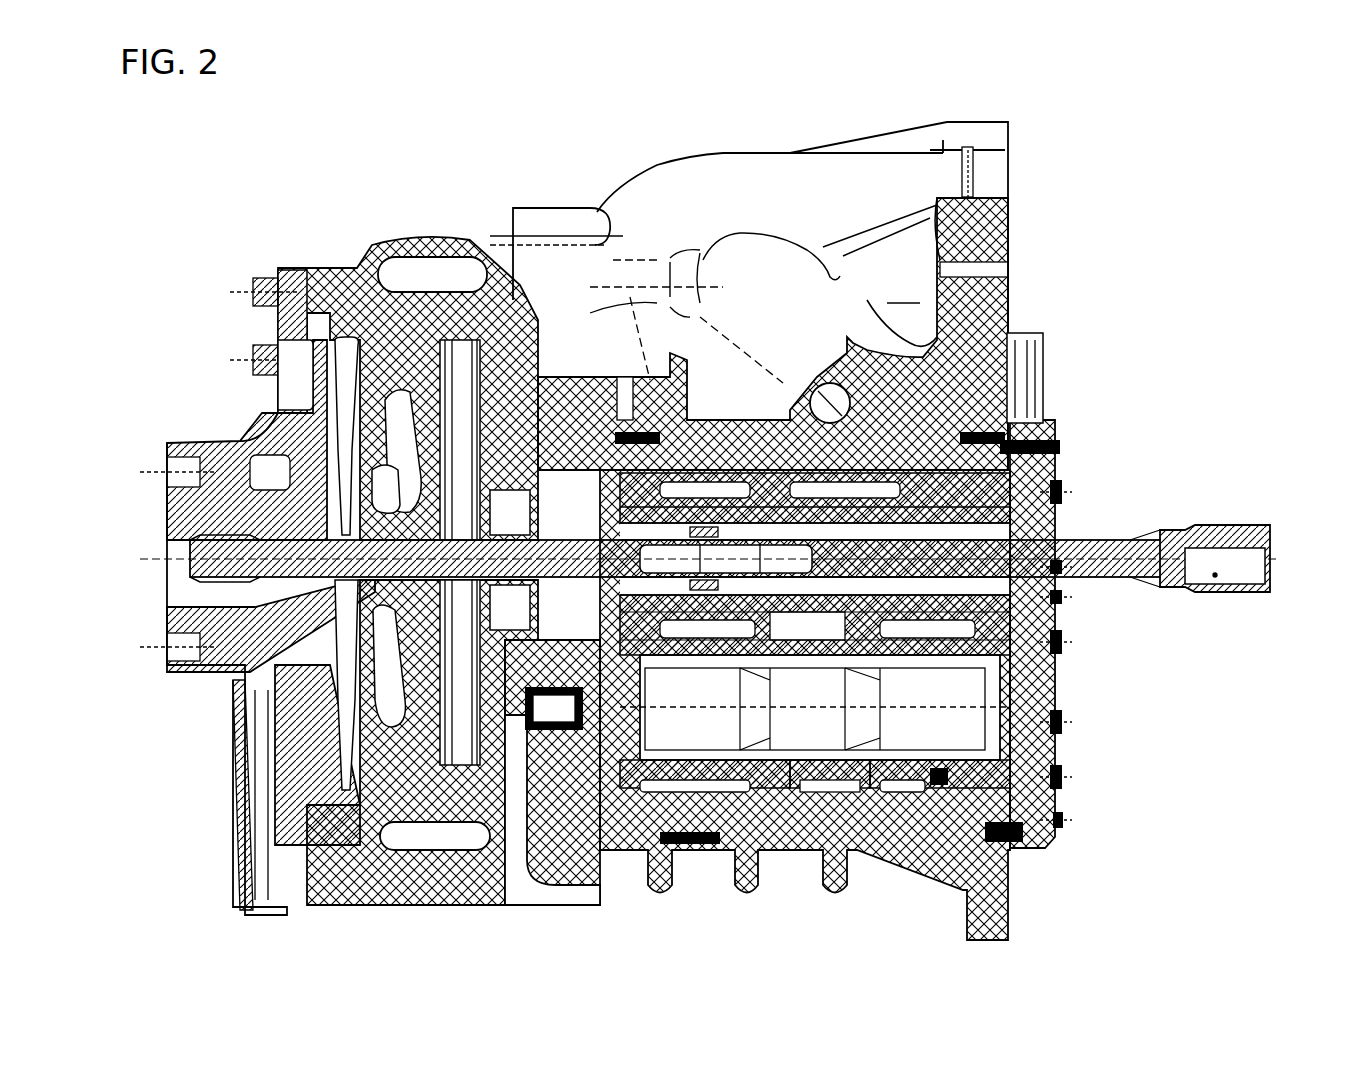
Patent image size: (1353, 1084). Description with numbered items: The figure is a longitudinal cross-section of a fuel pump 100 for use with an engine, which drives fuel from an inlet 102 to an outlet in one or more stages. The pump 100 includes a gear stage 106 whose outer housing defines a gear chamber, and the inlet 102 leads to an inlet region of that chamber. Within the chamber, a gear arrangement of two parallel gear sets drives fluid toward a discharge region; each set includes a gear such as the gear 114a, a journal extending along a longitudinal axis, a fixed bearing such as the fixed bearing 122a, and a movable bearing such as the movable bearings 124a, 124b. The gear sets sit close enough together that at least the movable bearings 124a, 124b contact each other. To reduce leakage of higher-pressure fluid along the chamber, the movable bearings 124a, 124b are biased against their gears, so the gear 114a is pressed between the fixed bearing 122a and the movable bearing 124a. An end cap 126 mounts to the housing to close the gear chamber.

The fuel pump 100 is at (206, 302).
The inlet 102 is at (1007, 163).
The gear stage 106 is at (1040, 870).
The gear 114a is at (815, 775).
The fixed bearing 122a is at (725, 785).
The movable bearing 124a is at (920, 770).
The movable bearing 124b is at (905, 505).
The end cap 126 is at (1040, 716).